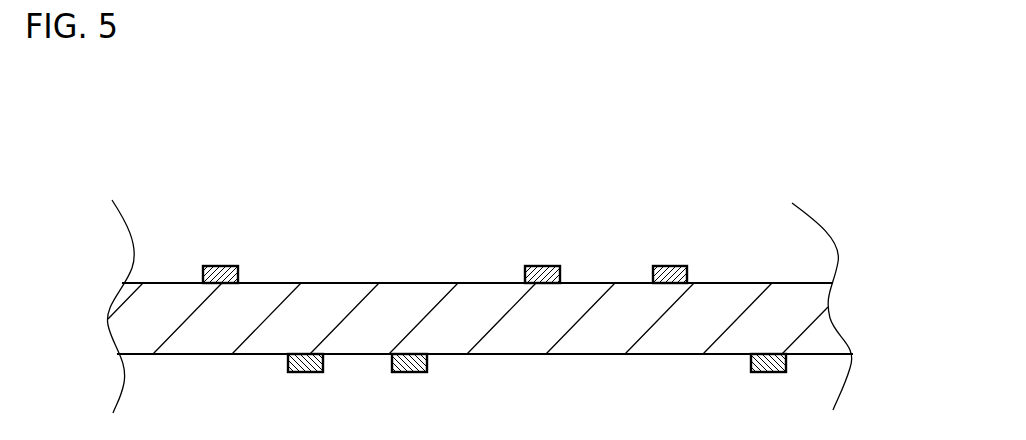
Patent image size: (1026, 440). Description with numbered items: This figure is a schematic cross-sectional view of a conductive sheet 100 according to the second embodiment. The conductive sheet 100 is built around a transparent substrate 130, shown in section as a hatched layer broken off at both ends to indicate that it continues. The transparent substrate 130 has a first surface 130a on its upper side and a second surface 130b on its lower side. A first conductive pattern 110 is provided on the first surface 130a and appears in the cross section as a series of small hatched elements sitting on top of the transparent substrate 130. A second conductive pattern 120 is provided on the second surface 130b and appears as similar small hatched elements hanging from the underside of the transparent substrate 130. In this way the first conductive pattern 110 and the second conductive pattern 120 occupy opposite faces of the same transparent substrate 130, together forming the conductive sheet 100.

The conductive sheet 100 is at (705, 178).
The first conductive pattern 110 is at (555, 252).
The second conductive pattern 120 is at (406, 382).
The transparent substrate 130 is at (823, 332).
The first surface 130a is at (330, 283).
The second surface 130b is at (577, 354).